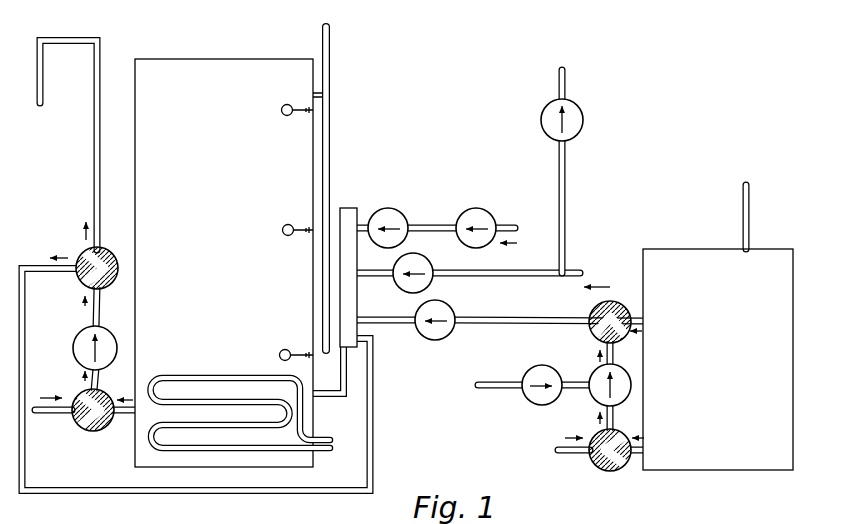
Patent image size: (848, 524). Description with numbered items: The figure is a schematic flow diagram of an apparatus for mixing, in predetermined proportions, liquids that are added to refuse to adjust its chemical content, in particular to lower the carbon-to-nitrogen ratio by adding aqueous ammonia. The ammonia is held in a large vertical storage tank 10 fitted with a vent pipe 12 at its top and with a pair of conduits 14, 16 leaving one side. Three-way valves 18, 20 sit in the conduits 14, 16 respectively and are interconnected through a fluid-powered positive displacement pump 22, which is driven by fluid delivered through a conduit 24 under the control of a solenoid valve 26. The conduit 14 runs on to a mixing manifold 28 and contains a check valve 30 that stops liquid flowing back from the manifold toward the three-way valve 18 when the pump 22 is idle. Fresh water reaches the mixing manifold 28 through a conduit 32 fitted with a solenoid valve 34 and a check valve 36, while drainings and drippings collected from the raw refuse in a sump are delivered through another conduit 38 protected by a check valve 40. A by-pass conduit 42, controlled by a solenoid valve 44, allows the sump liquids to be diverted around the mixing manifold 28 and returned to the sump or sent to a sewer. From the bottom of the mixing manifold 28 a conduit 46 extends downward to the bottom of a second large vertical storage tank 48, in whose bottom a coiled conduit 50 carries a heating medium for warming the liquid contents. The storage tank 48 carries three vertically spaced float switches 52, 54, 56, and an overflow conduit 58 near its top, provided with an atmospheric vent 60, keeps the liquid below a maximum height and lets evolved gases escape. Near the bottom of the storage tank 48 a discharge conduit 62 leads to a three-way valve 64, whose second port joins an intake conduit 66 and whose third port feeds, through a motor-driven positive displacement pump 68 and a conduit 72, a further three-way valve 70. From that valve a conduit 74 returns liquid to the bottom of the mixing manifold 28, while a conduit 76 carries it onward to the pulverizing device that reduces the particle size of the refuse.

The storage tank 10 is at (718, 359).
The vent pipe 12 is at (743, 226).
The conduit 14 is at (542, 319).
The conduit 16 is at (558, 444).
The three-way valve 18 is at (597, 315).
The three-way valve 20 is at (597, 467).
The fluid-powered positive displacement pump 22 is at (596, 398).
The conduit 24 is at (515, 382).
The solenoid valve 26 is at (540, 404).
The mixing manifold 28 is at (352, 210).
The check valve 30 is at (433, 339).
The conduit 32 is at (430, 225).
The solenoid valve 34 is at (487, 212).
The check valve 36 is at (407, 212).
The conduit 38 is at (500, 275).
The check valve 40 is at (440, 256).
The by-pass conduit 42 is at (566, 182).
The solenoid valve 44 is at (583, 111).
The conduit 46 is at (328, 397).
The storage tank 48 is at (224, 263).
The coiled conduit 50 is at (243, 453).
The float switch 52 is at (285, 349).
The float switch 54 is at (288, 224).
The float switch 56 is at (288, 104).
The overflow conduit 58 is at (333, 86).
The atmospheric vent 60 is at (332, 28).
The discharge conduit 62 is at (130, 413).
The three-way valve 64 is at (85, 426).
The intake conduit 66 is at (53, 413).
The motor driven positive displacement pump 68 is at (78, 337).
The three-way valve 70 is at (115, 259).
The conduit 72 is at (100, 306).
The conduit 74 is at (32, 265).
The conduit 76 is at (82, 38).